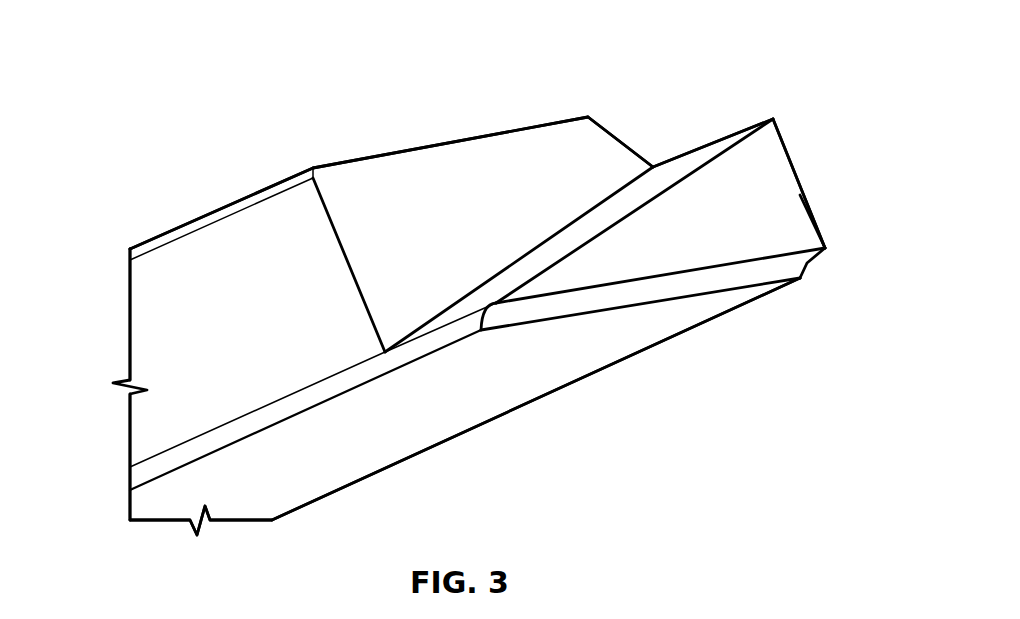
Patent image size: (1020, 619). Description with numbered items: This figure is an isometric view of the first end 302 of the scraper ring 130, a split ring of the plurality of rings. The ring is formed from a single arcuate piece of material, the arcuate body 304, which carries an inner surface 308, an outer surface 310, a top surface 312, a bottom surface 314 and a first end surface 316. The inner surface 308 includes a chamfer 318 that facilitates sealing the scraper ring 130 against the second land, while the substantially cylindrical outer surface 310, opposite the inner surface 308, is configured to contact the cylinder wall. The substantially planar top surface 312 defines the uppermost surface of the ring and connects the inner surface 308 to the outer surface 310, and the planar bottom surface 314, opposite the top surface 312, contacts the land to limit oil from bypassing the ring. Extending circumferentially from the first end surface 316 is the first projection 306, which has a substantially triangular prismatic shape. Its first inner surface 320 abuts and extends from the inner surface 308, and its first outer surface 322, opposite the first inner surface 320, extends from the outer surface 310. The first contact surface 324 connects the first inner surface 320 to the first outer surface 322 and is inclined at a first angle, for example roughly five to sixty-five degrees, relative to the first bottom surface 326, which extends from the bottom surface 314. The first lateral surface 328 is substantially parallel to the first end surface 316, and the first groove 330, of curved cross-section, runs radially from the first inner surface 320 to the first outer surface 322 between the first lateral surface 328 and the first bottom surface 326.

The scraper ring 130 is at (128, 41).
The first end 302 is at (472, 71).
The arcuate body 304 is at (162, 235).
The first projection 306 is at (797, 218).
The inner surface 308 is at (655, 163).
The outer surface 310 is at (153, 311).
The top surface 312 is at (240, 197).
The bottom surface 314 is at (327, 477).
The first end surface 316 is at (499, 218).
The chamfer 318 is at (620, 135).
The first inner surface 320 is at (800, 182).
The first outer surface 322 is at (442, 338).
The first contact surface 324 is at (550, 258).
The first bottom surface 326 is at (643, 332).
The first lateral surface 328 is at (721, 242).
The first groove 330 is at (805, 258).